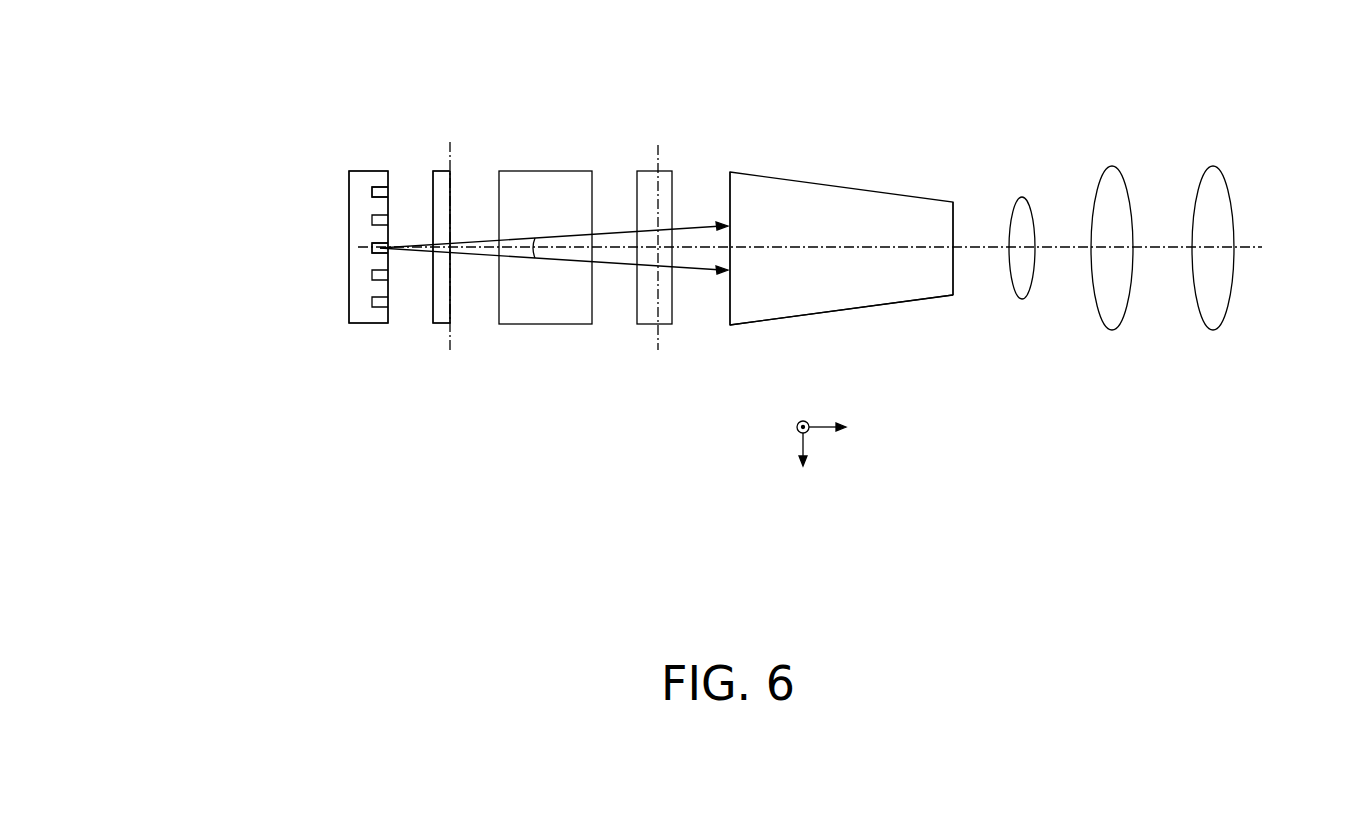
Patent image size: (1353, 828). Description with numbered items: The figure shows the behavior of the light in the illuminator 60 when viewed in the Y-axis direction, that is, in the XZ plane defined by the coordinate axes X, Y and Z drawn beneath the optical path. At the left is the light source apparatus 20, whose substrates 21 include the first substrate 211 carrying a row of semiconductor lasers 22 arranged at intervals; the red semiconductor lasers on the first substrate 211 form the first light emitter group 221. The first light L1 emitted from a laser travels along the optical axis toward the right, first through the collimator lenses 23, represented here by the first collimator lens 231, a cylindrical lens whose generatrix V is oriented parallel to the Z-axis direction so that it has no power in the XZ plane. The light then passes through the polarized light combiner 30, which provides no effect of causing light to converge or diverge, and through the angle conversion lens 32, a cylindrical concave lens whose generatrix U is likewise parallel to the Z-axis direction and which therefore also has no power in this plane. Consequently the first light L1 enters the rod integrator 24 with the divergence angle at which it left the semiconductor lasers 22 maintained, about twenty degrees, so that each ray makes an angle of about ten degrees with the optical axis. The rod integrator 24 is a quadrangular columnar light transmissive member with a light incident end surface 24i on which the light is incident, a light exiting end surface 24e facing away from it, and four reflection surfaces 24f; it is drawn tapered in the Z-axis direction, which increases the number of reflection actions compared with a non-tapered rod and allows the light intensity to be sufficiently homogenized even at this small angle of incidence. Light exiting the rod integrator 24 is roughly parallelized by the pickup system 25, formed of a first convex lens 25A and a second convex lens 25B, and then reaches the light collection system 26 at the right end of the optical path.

The light source apparatus 20 is at (354, 150).
The substrates 21 is at (368, 247).
The first substrate 211 is at (360, 227).
The semiconductor lasers 22 is at (372, 190).
The first light emitter group 221 is at (380, 220).
The collimator lenses 23 is at (441, 247).
The first collimator lens 231 is at (440, 182).
The polarized light combiner 30 is at (570, 178).
The angle conversion lens 32 is at (646, 180).
The illuminator 60 is at (759, 138).
The rod integrator 24 is at (836, 200).
The reflection surfaces 24f is at (840, 312).
The light exiting end surface 24e is at (953, 272).
The light incident end surface 24i is at (730, 307).
The pickup system 25 is at (1108, 80).
The first convex lens 25A is at (1028, 198).
The second convex lens 25B is at (1100, 175).
The light collection system 26 is at (1197, 178).
The first light L1 is at (428, 262).
The generatrix V is at (450, 345).
The generatrix U is at (657, 340).
The X axis X is at (836, 429).
The Y axis Y is at (796, 429).
The Z axis Z is at (804, 465).